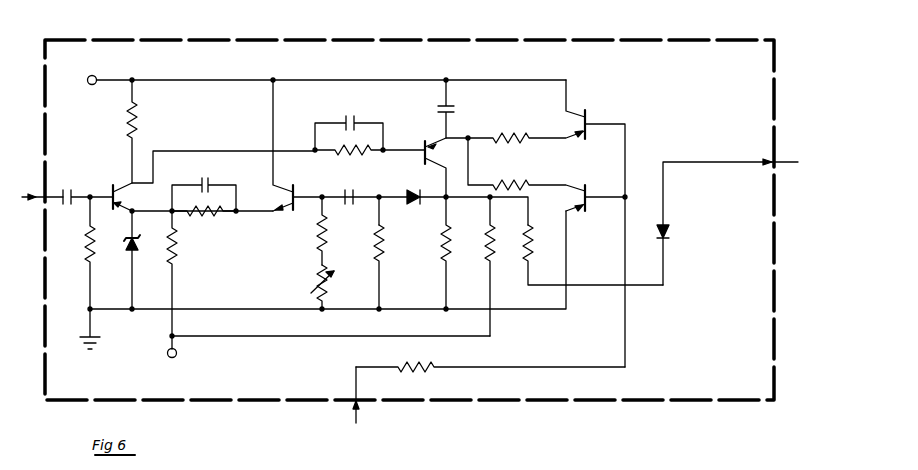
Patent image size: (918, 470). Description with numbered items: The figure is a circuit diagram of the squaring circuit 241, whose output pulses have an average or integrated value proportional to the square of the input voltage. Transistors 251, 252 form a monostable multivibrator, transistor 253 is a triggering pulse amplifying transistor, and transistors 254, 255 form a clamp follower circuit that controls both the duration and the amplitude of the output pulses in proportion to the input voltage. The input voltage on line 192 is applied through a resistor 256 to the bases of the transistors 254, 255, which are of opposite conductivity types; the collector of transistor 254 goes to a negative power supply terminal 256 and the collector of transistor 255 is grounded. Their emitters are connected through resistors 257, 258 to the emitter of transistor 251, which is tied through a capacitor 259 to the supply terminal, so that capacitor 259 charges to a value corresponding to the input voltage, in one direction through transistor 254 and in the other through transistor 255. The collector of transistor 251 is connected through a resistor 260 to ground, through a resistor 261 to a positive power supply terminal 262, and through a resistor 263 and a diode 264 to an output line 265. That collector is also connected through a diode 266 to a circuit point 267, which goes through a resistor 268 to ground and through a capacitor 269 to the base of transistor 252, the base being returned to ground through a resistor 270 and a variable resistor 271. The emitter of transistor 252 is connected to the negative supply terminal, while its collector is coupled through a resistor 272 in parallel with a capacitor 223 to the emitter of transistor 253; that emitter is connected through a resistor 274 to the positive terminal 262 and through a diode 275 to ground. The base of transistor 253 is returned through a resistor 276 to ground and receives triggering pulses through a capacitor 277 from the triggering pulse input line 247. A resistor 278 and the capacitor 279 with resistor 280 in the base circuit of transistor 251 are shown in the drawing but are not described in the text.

The squaring circuit 241 is at (521, 38).
The triggering pulse input line 247 is at (29, 195).
The capacitor 277 is at (77, 183).
The triggering pulse amplifying transistor 253 is at (118, 199).
The resistor 278 is at (137, 111).
The resistor / negative power supply terminal 256 is at (92, 85).
The resistor 276 is at (93, 237).
The diode 275 is at (134, 238).
The resistor 274 is at (176, 239).
The resistor 272 is at (218, 214).
The capacitor 223 is at (207, 181).
The transistor 252 is at (291, 198).
The capacitor 279 is at (352, 121).
The resistor 280 is at (351, 156).
The transistor 251 is at (429, 150).
The capacitor 259 is at (448, 105).
The resistor 257 is at (498, 134).
The resistor 258 is at (498, 181).
The transistor 254 is at (584, 125).
The transistor 255 is at (584, 198).
The resistor 270 is at (325, 233).
The variable resistor 271 is at (326, 286).
The capacitor 269 is at (350, 192).
The circuit point 267 is at (380, 199).
The resistor 268 is at (384, 237).
The diode 266 is at (430, 181).
The resistor 260 is at (449, 235).
The resistor 261 is at (492, 235).
The resistor 263 is at (532, 235).
The diode 264 is at (666, 227).
The output line 265 is at (666, 189).
The positive power supply terminal 262 is at (177, 353).
The line 192 is at (358, 423).